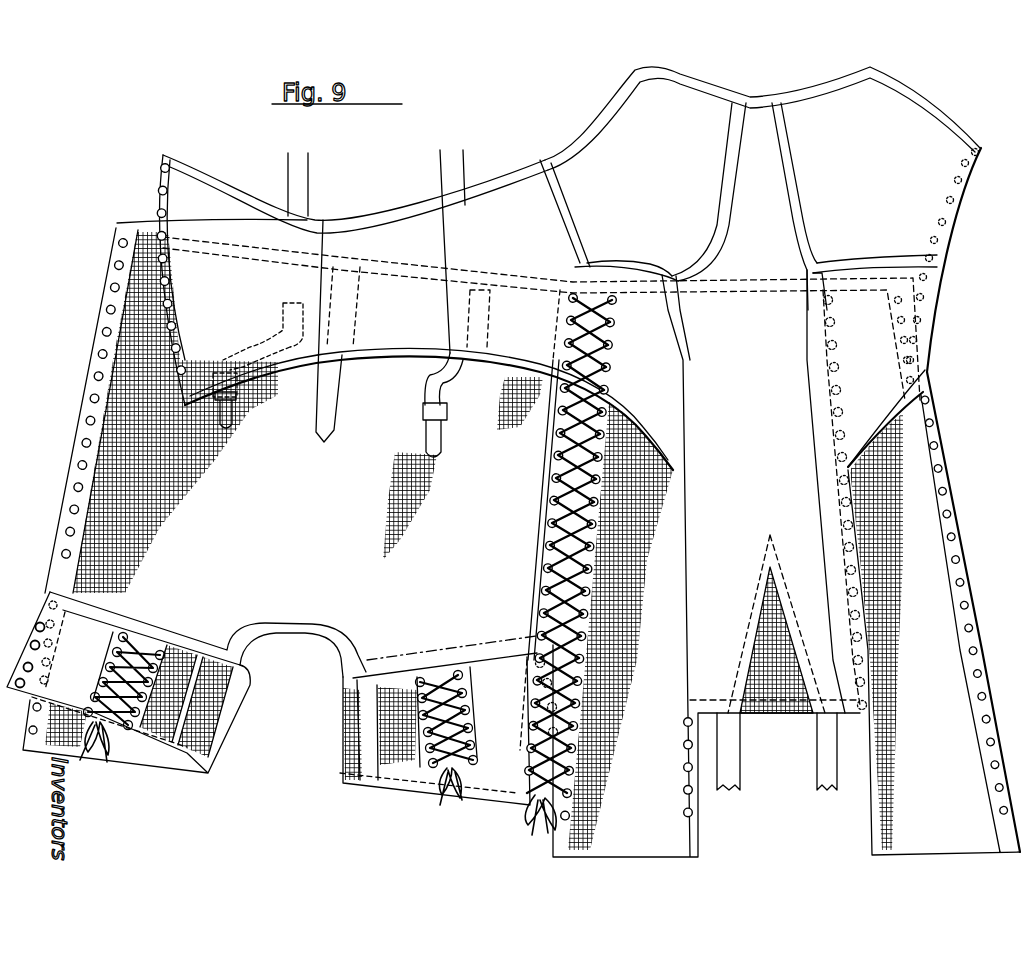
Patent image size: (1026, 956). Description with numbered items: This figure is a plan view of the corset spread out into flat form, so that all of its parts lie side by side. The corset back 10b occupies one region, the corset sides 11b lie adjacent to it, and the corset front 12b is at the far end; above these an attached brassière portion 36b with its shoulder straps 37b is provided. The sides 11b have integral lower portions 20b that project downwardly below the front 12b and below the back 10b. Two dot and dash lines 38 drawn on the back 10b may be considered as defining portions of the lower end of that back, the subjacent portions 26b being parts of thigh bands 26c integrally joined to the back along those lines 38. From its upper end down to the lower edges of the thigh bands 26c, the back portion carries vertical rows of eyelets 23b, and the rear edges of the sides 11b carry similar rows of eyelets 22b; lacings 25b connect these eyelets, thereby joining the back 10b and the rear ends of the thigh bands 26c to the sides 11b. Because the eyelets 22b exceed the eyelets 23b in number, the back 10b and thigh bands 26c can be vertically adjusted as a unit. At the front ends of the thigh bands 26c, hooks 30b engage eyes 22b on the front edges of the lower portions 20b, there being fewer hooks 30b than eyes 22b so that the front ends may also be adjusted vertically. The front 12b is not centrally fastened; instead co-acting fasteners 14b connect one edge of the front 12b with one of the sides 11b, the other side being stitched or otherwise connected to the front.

The corset back 10b is at (465, 262).
The corset sides 11b is at (650, 256).
The corset front 12b is at (752, 250).
The co-acting fasteners 14b is at (867, 600).
The lower portions of the sides 20b is at (10, 607).
The eyelets 22b is at (590, 548).
The eyelets 23b is at (88, 466).
The lacings 25b is at (553, 550).
The subjacent portions 26b is at (142, 762).
The thigh bands 26c is at (347, 727).
The hooks 30b is at (570, 688).
The brassière portion 36b is at (573, 157).
The shoulder straps 37b is at (442, 176).
The dot and dash lines 38 is at (162, 614).